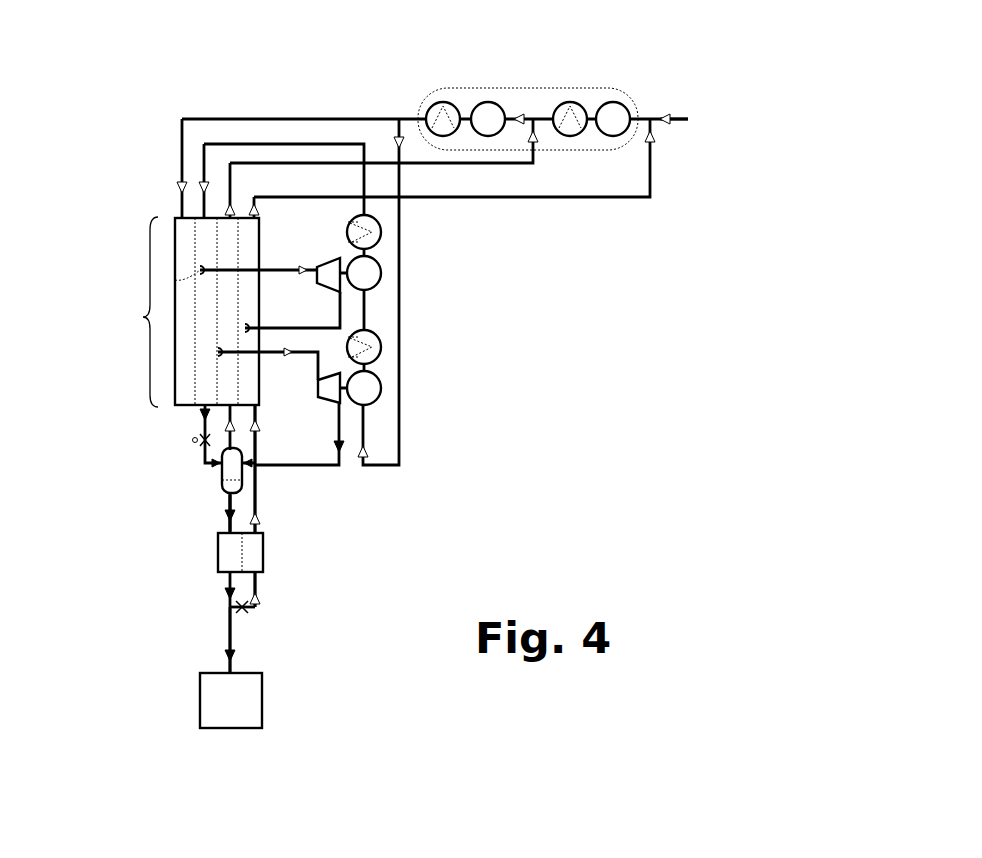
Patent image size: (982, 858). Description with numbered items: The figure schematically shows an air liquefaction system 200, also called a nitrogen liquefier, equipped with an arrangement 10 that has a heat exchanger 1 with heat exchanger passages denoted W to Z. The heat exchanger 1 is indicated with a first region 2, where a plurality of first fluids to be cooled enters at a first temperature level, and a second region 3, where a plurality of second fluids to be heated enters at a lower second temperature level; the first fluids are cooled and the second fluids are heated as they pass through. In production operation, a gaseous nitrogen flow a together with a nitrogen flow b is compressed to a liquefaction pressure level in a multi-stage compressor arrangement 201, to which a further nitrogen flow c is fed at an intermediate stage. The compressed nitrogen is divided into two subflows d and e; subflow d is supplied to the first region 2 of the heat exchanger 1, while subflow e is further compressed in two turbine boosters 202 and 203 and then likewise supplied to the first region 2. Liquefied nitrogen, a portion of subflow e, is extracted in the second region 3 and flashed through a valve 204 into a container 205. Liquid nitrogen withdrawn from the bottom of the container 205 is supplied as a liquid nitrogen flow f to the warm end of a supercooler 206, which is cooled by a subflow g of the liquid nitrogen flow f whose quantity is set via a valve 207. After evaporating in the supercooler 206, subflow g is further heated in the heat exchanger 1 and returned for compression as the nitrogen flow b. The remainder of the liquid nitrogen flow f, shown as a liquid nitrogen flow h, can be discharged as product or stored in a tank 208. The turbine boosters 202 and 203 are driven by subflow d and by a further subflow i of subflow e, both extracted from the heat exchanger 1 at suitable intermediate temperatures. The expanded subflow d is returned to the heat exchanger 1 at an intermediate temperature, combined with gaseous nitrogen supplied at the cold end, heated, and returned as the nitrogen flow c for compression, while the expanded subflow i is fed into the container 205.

The heat exchanger 1 is at (262, 302).
The first region 2 is at (168, 207).
The second region 3 is at (166, 414).
The arrangement 10 is at (131, 312).
The air liquefaction system 200 is at (572, 297).
The multi-stage compressor arrangement 201 is at (518, 87).
The turbine booster 202 is at (416, 370).
The turbine booster 203 is at (416, 235).
The valve 204 is at (203, 447).
The container 205 is at (220, 497).
The supercooler 206 is at (265, 548).
The valve 207 is at (243, 617).
The tank 208 is at (231, 700).
The gaseous nitrogen flow a is at (676, 117).
The nitrogen flow b is at (653, 197).
The nitrogen flow c is at (536, 166).
The subflow d is at (358, 117).
The subflow e is at (250, 142).
The liquid nitrogen flow f is at (227, 525).
The subflow g is at (260, 493).
The liquid nitrogen flow h is at (225, 650).
The subflow i is at (302, 357).